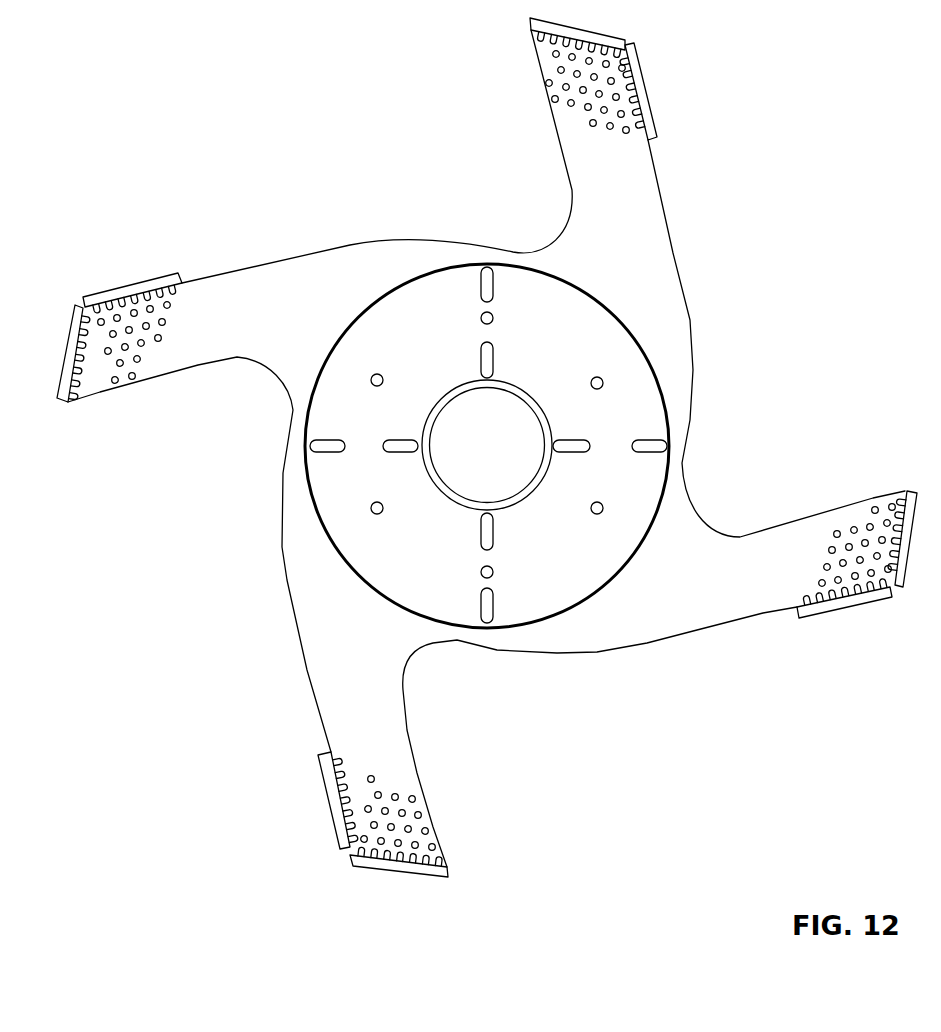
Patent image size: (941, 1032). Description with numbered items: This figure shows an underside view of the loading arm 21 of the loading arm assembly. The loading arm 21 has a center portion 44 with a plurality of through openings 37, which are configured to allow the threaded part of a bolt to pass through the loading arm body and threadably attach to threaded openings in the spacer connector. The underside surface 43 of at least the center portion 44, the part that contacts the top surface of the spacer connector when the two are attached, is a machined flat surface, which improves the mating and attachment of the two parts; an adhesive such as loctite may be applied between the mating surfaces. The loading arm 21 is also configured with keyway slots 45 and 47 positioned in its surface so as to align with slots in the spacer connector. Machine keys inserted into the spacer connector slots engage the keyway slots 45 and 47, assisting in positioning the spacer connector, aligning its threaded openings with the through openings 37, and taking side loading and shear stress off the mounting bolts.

The loading arm 21 is at (720, 321).
The through openings 37 is at (604, 508).
The underside surface 43 is at (384, 379).
The center portion 44 is at (345, 488).
The keyway slots 45 is at (493, 358).
The keyway slots 47 is at (493, 287).